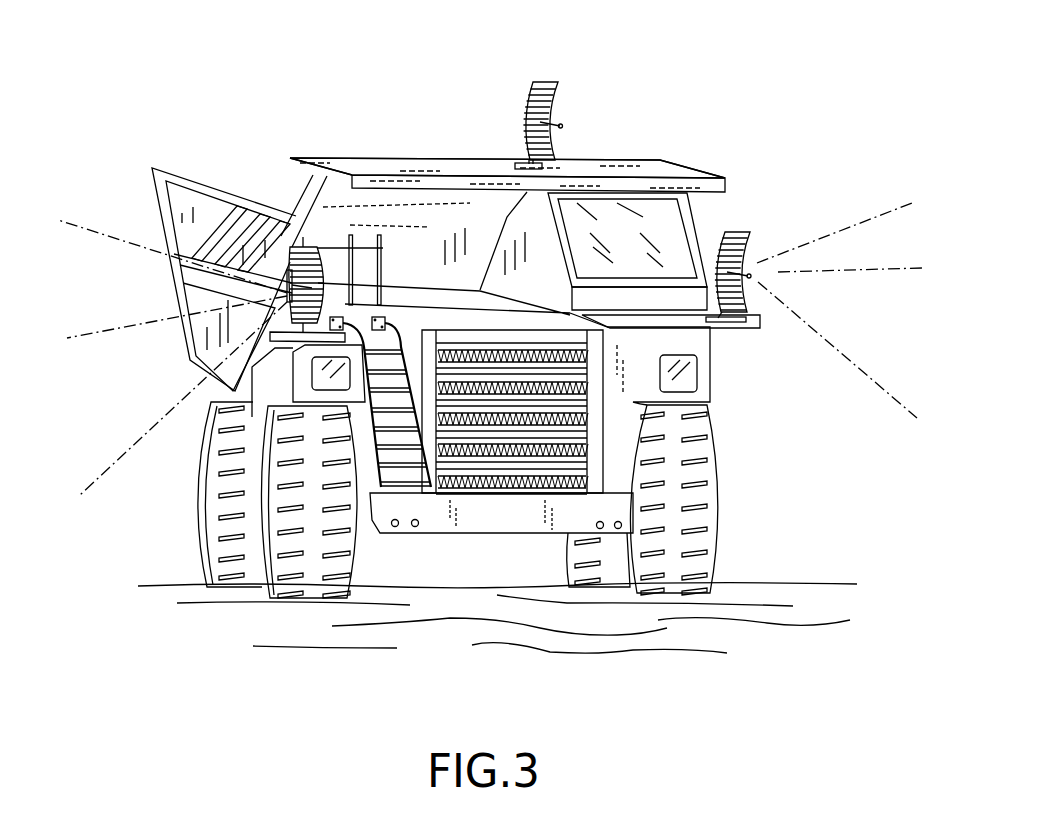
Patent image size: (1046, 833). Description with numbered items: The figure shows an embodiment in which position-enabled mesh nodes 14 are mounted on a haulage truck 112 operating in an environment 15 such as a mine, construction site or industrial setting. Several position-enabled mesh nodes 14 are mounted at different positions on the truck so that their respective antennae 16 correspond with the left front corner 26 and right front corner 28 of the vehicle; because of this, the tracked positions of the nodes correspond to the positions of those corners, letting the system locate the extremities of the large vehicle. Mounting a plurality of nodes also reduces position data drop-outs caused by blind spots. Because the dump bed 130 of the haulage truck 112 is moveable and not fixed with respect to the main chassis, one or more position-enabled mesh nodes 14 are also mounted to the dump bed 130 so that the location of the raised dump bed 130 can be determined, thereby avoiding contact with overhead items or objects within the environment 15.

The haulage truck 112 is at (183, 630).
The dump bed 130 is at (723, 182).
The antenna 16 is at (298, 248).
The position-enabled mesh node 14 is at (520, 167).
The left front corner 26 is at (730, 327).
The right front corner 28 is at (325, 343).
The environment 15 is at (627, 650).